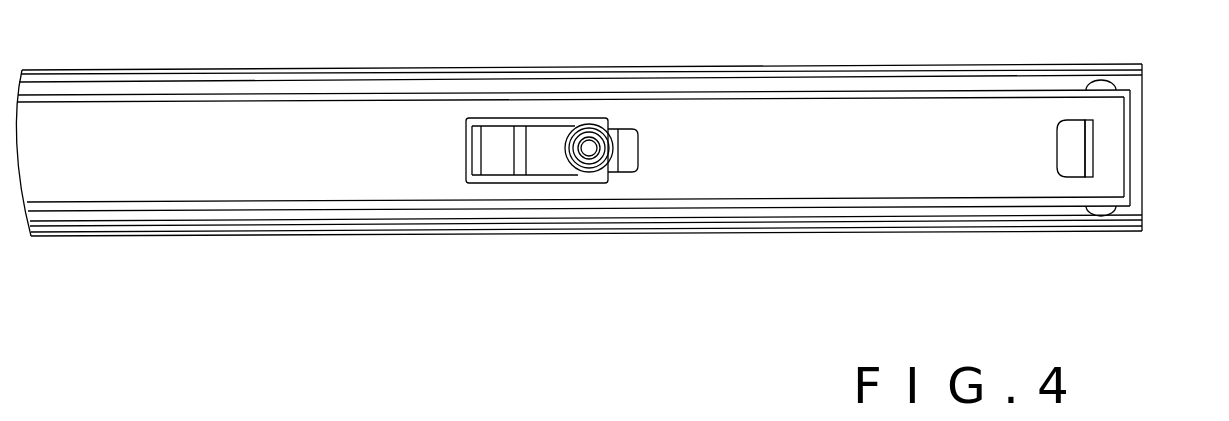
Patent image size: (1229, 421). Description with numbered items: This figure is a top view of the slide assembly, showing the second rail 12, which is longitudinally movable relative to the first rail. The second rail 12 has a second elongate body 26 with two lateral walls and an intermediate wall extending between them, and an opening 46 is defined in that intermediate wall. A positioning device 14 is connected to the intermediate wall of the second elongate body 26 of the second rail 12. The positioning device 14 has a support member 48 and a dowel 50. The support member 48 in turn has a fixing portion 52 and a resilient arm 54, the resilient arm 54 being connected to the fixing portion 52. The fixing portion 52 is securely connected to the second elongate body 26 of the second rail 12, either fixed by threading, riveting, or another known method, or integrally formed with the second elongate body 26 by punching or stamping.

The second rail 12 is at (1118, 155).
The positioning device 14 is at (557, 196).
The second elongate body 26 is at (722, 120).
The opening 46 is at (537, 189).
The support member 48 is at (497, 247).
The dowel 50 is at (597, 170).
The fixing portion 52 is at (473, 152).
The resilient arm 54 is at (547, 162).